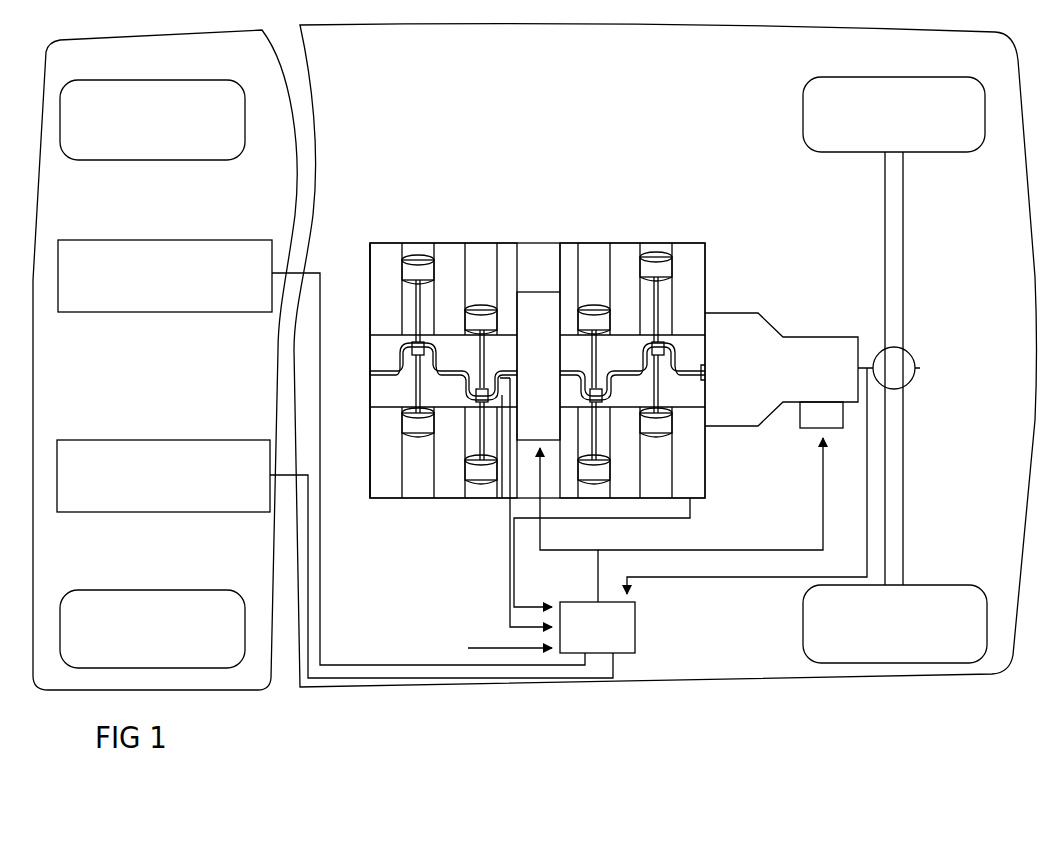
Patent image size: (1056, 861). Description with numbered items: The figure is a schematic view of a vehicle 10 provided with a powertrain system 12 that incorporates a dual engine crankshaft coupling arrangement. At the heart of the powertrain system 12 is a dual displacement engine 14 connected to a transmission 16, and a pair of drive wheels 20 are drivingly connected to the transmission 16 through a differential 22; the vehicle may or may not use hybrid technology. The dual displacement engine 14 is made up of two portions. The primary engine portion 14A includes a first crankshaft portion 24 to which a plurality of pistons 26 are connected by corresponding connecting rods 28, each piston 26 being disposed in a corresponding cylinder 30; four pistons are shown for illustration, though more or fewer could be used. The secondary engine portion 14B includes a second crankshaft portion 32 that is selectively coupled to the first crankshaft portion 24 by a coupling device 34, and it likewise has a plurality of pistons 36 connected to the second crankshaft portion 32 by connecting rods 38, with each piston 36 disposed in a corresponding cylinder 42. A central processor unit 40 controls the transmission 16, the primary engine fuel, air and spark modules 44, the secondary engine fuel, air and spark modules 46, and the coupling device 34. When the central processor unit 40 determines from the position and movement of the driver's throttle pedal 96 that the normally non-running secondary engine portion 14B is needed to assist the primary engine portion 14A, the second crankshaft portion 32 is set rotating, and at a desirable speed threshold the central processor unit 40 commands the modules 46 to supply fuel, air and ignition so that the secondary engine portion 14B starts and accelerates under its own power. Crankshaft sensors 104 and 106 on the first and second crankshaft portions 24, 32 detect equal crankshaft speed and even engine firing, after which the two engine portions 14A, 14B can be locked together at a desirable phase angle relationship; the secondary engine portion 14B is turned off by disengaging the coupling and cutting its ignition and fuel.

The vehicle 10 is at (874, 715).
The powertrain system 12 is at (793, 262).
The dual displacement engine 14 is at (535, 212).
The primary engine portion 14A is at (700, 238).
The secondary engine portion 14B is at (372, 240).
The transmission 16 is at (822, 337).
The drive wheels 20 is at (918, 152).
The differential 22 is at (918, 370).
The first crankshaft portion 24 is at (568, 368).
The pistons 26 is at (598, 306).
The connecting rods 28 is at (598, 355).
The cylinder 30 is at (580, 255).
The second crankshaft portion 32 is at (372, 362).
The coupling device 34 is at (550, 292).
The pistons 36 is at (485, 305).
The connecting rods 38 is at (482, 378).
The central processor unit 40 is at (636, 640).
The cylinder 42 is at (465, 250).
The primary engine fuel, air, and spark modules 44 is at (180, 313).
The secondary engine fuel, air, and spark modules 46 is at (172, 440).
The throttle pedal 96 is at (417, 643).
The crankshaft sensor 104 is at (703, 385).
The crankshaft sensor 106 is at (502, 500).